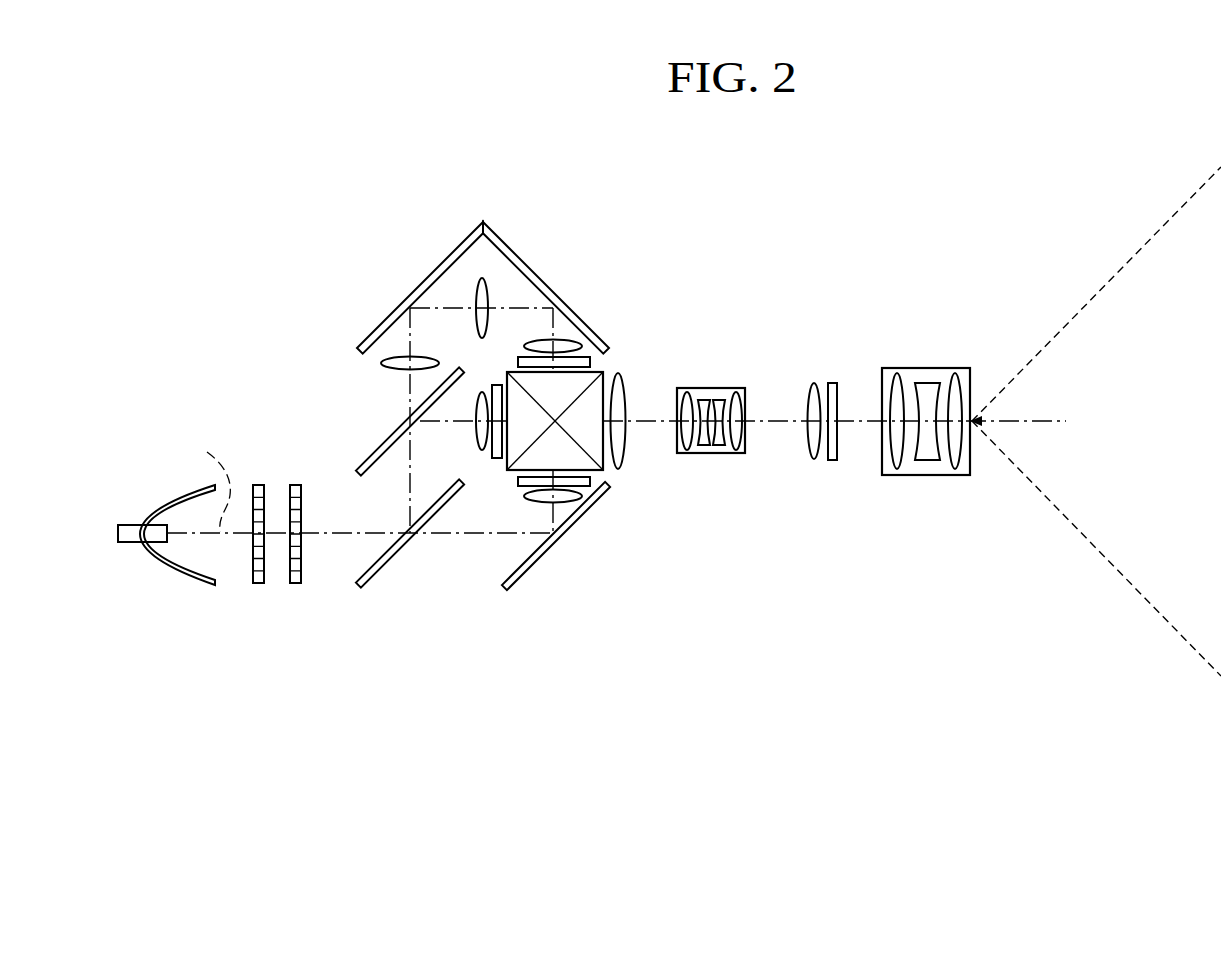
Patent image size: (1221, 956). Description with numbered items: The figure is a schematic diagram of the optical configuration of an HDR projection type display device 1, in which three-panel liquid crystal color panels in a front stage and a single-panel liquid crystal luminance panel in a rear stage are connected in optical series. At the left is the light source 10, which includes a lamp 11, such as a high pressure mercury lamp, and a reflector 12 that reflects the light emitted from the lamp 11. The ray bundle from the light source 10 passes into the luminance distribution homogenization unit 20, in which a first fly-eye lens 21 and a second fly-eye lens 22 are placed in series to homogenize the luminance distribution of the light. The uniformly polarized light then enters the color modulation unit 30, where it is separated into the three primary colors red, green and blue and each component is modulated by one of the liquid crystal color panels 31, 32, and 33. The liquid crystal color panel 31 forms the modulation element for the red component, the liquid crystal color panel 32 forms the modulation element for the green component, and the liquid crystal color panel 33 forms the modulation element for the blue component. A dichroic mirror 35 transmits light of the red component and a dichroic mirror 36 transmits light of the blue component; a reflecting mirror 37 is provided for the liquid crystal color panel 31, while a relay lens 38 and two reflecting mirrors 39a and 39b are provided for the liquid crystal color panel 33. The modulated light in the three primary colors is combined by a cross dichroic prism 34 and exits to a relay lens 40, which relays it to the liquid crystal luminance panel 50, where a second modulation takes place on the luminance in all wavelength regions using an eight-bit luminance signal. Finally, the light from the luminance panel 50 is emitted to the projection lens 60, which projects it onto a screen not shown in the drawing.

The projection type display device 1 is at (837, 725).
The light source 10 is at (145, 492).
The lamp 11 is at (132, 543).
The reflector 12 is at (178, 578).
The luminance distribution homogenization unit 20 is at (287, 465).
The first fly-eye lens 21 is at (255, 587).
The second fly-eye lens 22 is at (290, 587).
The color modulation unit 30 is at (402, 260).
The liquid crystal color panel 31 is at (592, 488).
The liquid crystal color panel 32 is at (498, 460).
The liquid crystal color panel 33 is at (592, 357).
The cross dichroic prism 34 is at (593, 393).
The dichroic mirror 35 is at (388, 563).
The dichroic mirror 36 is at (388, 438).
The reflecting mirror 37 is at (543, 562).
The relay lens 38 is at (485, 297).
The reflecting mirror 39a is at (388, 318).
The reflecting mirror 39b is at (545, 278).
The relay lens 40 is at (710, 455).
The liquid crystal luminance panel 50 is at (833, 460).
The projection lens 60 is at (930, 475).